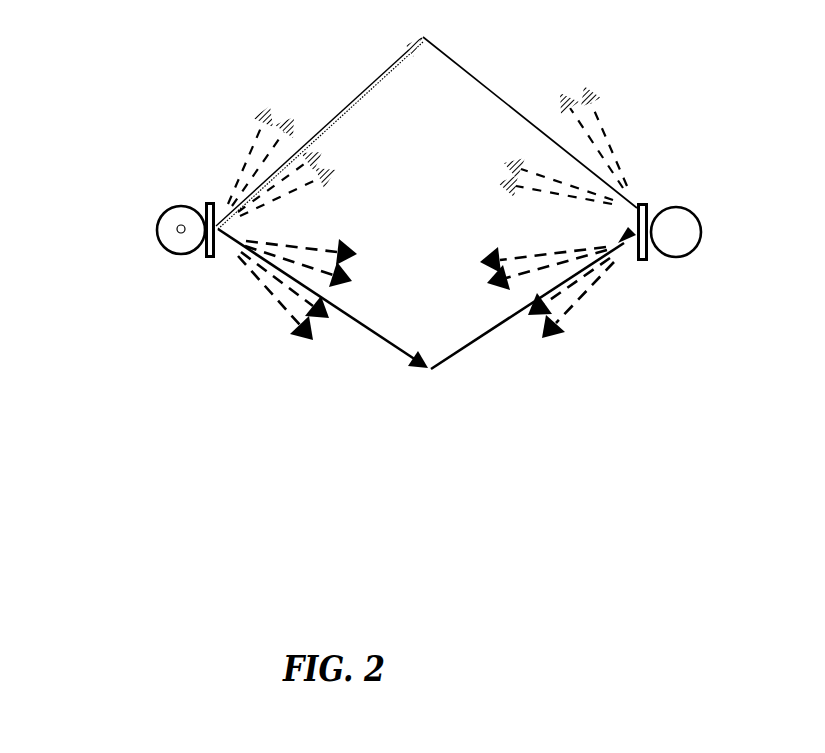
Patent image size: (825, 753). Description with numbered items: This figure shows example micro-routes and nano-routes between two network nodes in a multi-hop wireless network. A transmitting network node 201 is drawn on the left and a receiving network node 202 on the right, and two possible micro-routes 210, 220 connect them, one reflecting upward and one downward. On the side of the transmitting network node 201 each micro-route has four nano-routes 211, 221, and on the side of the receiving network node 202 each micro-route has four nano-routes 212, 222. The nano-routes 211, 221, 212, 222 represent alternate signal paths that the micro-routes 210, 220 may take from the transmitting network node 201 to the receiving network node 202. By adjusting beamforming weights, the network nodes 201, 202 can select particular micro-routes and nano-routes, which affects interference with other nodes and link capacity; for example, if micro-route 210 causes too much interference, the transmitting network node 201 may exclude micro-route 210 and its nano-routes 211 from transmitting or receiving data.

The transmitting network node 201 is at (157, 230).
The receiving network node 202 is at (700, 243).
The micro-route 210 is at (350, 102).
The nano-routes 211 is at (257, 157).
The nano-routes 212 is at (603, 148).
The micro-route 220 is at (378, 335).
The nano-routes 221 is at (290, 310).
The nano-routes 222 is at (577, 297).